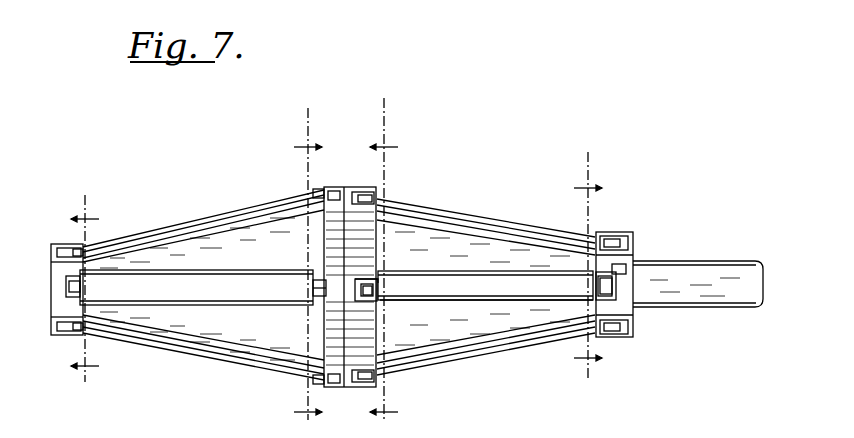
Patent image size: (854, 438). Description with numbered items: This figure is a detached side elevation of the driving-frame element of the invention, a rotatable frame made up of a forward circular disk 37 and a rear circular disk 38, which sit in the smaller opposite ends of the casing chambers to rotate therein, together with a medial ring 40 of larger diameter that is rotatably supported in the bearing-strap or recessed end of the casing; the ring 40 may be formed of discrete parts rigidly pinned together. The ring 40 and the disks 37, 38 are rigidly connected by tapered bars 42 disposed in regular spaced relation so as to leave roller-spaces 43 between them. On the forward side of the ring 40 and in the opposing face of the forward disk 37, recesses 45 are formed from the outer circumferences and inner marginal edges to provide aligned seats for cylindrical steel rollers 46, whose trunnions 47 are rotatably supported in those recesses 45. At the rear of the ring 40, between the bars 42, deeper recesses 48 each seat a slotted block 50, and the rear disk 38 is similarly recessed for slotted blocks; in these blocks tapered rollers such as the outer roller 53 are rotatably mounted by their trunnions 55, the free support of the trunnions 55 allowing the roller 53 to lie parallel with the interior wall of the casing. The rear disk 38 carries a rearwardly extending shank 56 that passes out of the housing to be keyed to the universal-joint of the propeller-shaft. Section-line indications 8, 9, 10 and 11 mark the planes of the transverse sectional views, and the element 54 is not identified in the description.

The section line 8- 8 is at (86, 290).
The section line 9- 9 is at (304, 264).
The section line 10- 10 is at (390, 259).
The section line 11- 11 is at (582, 265).
The circular disk 37 is at (60, 336).
The circular disk 38 is at (620, 236).
The medial ring 40 is at (347, 192).
The tapered bars 42 is at (246, 318).
The roller-spaces 43 is at (190, 340).
The recesses 45 is at (318, 197).
The cylindrical steel rollers 46 is at (318, 290).
The trunnions 47 is at (330, 283).
The deeper recesses 48 is at (373, 388).
The slotted block 50 is at (376, 280).
The tapered roller 53 is at (528, 292).
The socket 54 is at (626, 286).
The trunnions 55 is at (628, 300).
The shank 56 is at (700, 266).